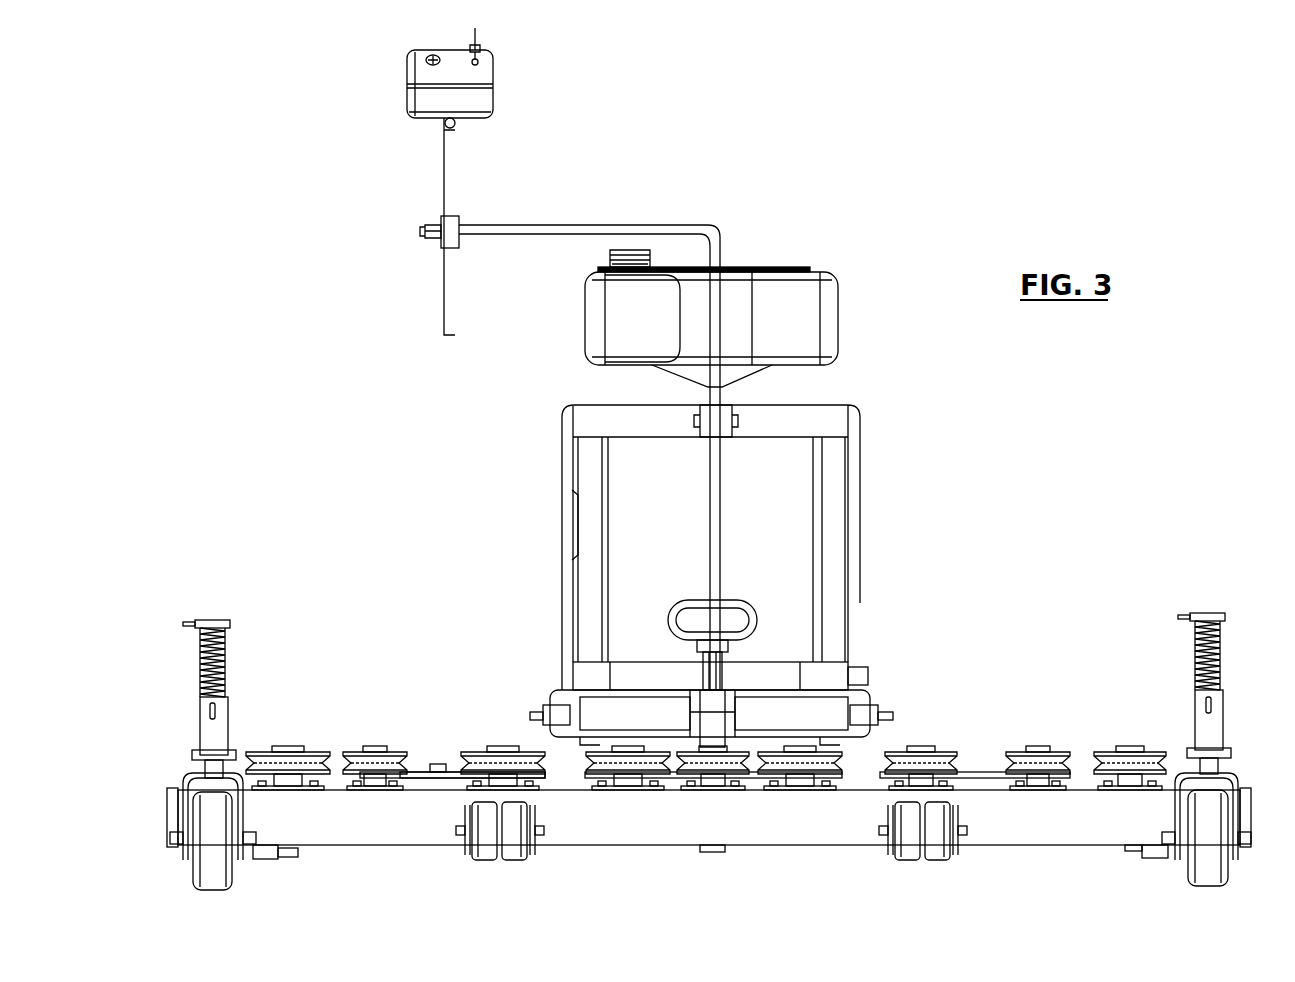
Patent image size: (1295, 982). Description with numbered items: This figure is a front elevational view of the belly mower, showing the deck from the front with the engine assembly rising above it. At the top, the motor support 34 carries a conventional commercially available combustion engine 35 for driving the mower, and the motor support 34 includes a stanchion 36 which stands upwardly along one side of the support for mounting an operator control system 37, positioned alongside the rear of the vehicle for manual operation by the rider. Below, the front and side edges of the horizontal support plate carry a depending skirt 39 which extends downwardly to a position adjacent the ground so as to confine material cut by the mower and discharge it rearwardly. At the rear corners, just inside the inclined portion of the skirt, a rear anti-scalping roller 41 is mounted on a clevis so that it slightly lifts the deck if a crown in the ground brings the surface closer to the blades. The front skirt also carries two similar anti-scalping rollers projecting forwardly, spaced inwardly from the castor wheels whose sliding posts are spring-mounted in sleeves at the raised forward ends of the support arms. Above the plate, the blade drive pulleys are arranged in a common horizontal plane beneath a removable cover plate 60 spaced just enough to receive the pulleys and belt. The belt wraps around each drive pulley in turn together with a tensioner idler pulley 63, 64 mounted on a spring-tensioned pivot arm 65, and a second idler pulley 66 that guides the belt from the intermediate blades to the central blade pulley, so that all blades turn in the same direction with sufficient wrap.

The motor support 34 is at (879, 610).
The combustion engine 35 is at (845, 423).
The stanchion 36 is at (466, 189).
The operator control system 37 is at (490, 99).
The depending skirt 39 is at (657, 832).
The rear anti-scalping roller 41 is at (1140, 869).
The cover plate 60 is at (426, 748).
The tensioner idler pulley 63 is at (1067, 740).
The tensioner idler pulley 64 is at (358, 745).
The pivot arm 65 is at (855, 752).
The second idler pulley 66 is at (578, 747).